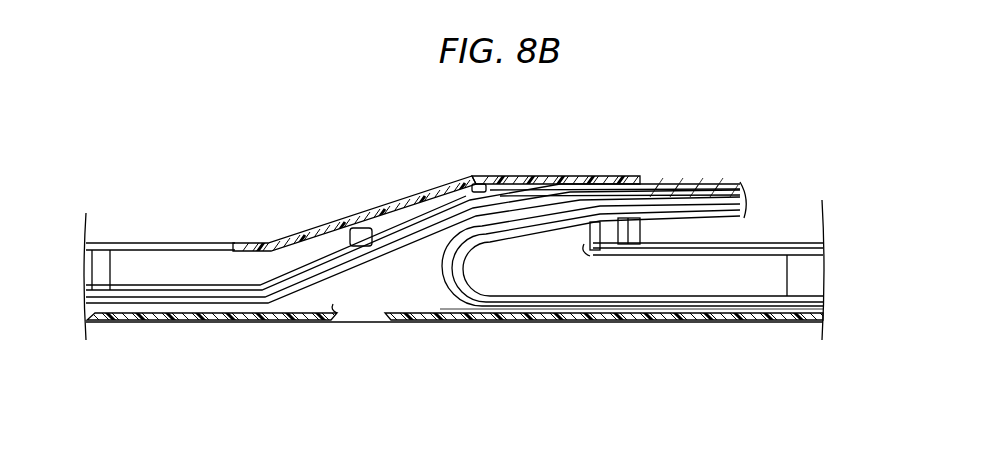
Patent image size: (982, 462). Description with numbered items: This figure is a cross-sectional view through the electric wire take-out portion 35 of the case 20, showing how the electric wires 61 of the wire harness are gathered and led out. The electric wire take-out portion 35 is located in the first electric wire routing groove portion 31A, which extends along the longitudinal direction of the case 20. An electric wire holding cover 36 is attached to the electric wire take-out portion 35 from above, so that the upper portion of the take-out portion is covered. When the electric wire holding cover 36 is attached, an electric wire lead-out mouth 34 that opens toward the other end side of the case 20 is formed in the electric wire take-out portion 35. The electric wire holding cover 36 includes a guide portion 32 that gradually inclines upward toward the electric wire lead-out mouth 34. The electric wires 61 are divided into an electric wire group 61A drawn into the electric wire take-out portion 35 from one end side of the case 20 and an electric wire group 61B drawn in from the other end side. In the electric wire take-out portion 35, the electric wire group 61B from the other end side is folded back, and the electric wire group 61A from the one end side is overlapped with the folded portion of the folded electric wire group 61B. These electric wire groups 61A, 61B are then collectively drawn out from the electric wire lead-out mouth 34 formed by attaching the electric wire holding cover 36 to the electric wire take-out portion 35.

The case 20 is at (270, 330).
The first electric wire routing groove portion 31A is at (168, 262).
The electric wire group 61A is at (200, 290).
The guide portion 32 is at (397, 193).
The electric wire holding cover 36 is at (546, 162).
The electric wires 61 is at (712, 183).
The electric wire take-out portion 35 is at (512, 272).
The electric wire lead-out mouth 34 is at (668, 226).
The electric wire group 61B is at (667, 300).